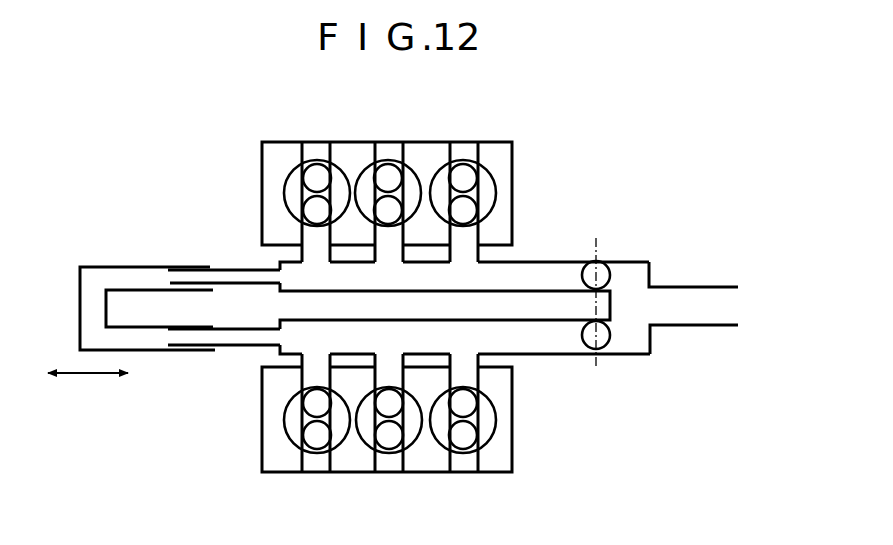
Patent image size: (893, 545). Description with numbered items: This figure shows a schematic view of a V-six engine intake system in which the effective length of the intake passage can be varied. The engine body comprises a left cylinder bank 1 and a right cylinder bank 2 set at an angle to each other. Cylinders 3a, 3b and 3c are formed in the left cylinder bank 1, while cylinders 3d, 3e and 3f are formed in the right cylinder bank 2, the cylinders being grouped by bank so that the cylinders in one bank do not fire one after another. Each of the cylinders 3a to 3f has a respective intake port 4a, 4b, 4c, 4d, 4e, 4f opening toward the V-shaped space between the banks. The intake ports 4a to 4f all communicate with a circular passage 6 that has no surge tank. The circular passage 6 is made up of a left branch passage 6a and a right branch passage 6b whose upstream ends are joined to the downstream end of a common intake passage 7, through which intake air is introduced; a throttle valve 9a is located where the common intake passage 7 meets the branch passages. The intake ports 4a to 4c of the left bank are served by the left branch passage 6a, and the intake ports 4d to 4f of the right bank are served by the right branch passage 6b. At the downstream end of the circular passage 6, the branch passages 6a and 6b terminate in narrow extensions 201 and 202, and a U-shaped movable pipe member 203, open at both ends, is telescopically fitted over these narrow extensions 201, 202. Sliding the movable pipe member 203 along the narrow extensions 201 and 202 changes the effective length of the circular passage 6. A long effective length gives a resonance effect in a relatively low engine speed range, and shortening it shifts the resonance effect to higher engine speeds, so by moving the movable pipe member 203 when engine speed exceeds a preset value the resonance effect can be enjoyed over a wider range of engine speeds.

The left cylinder bank 1 is at (256, 155).
The right cylinder bank 2 is at (252, 434).
The No. 1 cylinder 3a is at (486, 170).
The No. 2 cylinder 3b is at (412, 170).
The No. 3 cylinder 3c is at (286, 185).
The No. 4 cylinder 3d is at (485, 441).
The No. 5 cylinder 3e is at (414, 442).
The No. 6 cylinder 3f is at (341, 442).
The intake port 4a is at (477, 205).
The intake port 4b is at (356, 188).
The intake port 4c is at (304, 206).
The intake port 4d is at (477, 406).
The intake port 4e is at (378, 432).
The intake port 4f is at (289, 433).
The circular passage 6 is at (187, 246).
The left branch passage 6a is at (545, 260).
The right branch passage 6b is at (550, 354).
The common intake passage 7 is at (700, 286).
The throttle valve 9a is at (610, 272).
The narrow extension 201 is at (240, 269).
The narrow extension 202 is at (235, 349).
The U-shaped movable pipe member 203 is at (80, 283).